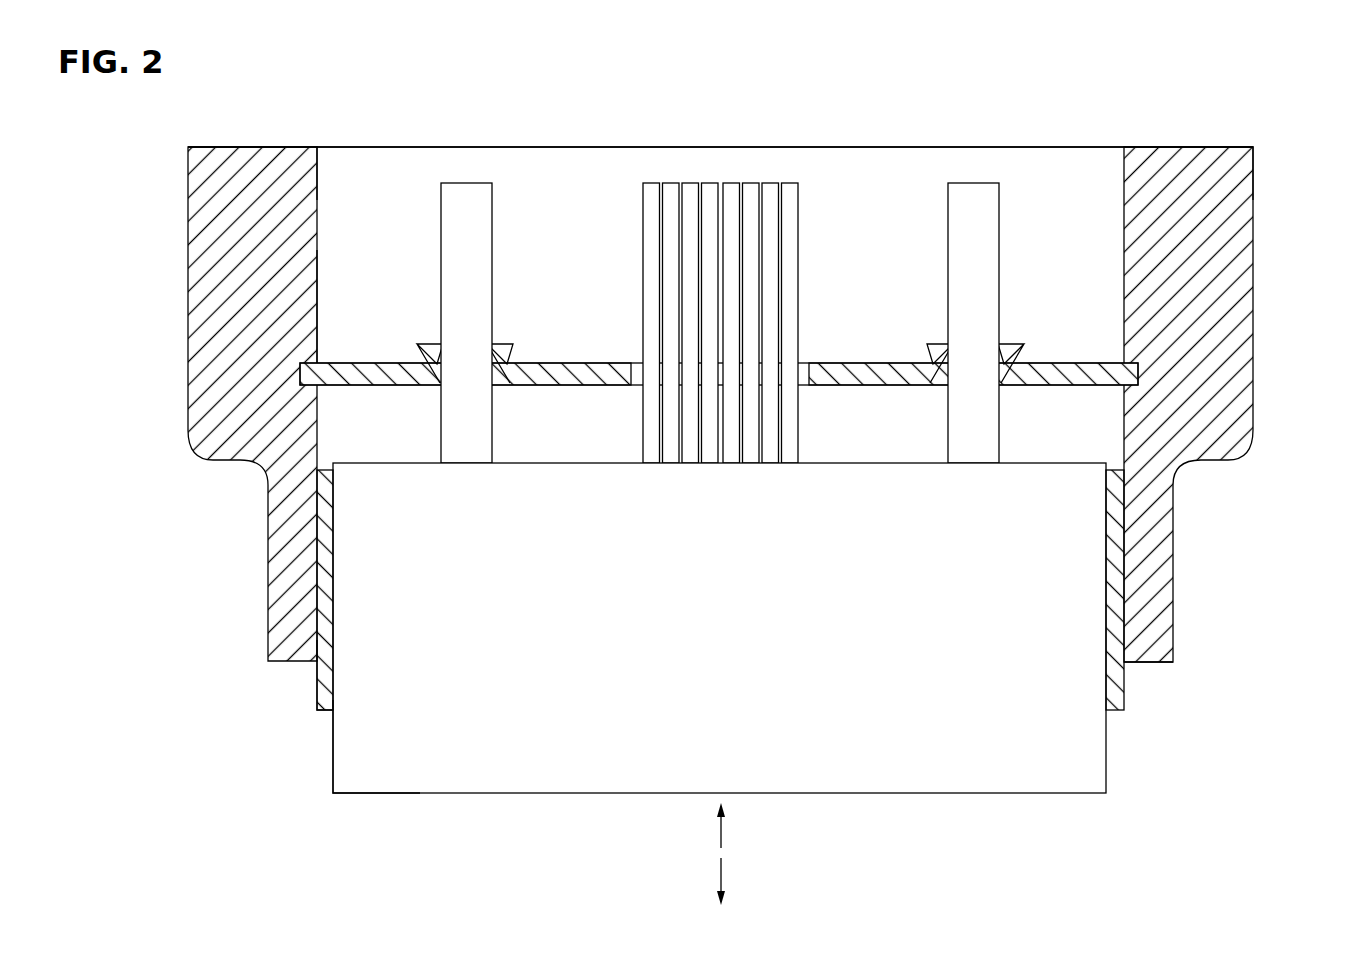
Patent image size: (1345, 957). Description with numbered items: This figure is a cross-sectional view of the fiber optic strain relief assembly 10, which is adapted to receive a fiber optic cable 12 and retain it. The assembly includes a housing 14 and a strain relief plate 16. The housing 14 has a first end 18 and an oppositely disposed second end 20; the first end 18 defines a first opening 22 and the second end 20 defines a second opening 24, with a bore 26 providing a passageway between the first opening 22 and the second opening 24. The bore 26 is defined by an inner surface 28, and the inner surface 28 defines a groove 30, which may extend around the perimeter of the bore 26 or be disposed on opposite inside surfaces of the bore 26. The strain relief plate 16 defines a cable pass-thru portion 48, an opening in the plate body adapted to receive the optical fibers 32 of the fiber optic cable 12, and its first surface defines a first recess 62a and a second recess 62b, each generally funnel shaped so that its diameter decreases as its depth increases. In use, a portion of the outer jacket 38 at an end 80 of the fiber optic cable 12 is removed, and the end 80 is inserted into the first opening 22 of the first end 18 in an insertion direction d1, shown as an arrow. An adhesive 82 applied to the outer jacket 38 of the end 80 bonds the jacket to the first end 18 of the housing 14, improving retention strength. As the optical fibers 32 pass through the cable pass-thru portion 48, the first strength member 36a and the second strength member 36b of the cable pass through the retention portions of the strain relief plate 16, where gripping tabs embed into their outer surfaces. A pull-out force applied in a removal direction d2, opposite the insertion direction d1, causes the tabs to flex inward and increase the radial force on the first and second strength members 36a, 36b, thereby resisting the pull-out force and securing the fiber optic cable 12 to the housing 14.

The fiber optic strain relief assembly 10 is at (195, 131).
The fiber optic cable 12 is at (1124, 763).
The housing 14 is at (1253, 355).
The strain relief plate 16 is at (1090, 342).
The first end 18 is at (1152, 662).
The second end 20 is at (1172, 147).
The first opening 22 is at (317, 643).
The second opening 24 is at (319, 176).
The bore 26 is at (322, 239).
The inner surface 28 is at (319, 310).
The groove 30 is at (317, 383).
The optical fibers 32 is at (712, 183).
The first strength member 36a is at (492, 196).
The second strength member 36b is at (999, 203).
The outer jacket 38 is at (335, 742).
The cable pass-thru portion 48 is at (809, 373).
The first recess 62a is at (508, 399).
The second recess 62b is at (931, 399).
The end 80 is at (1068, 554).
The adhesive 82 is at (326, 580).
The insertion direction d1 is at (721, 838).
The removal direction d2 is at (721, 880).